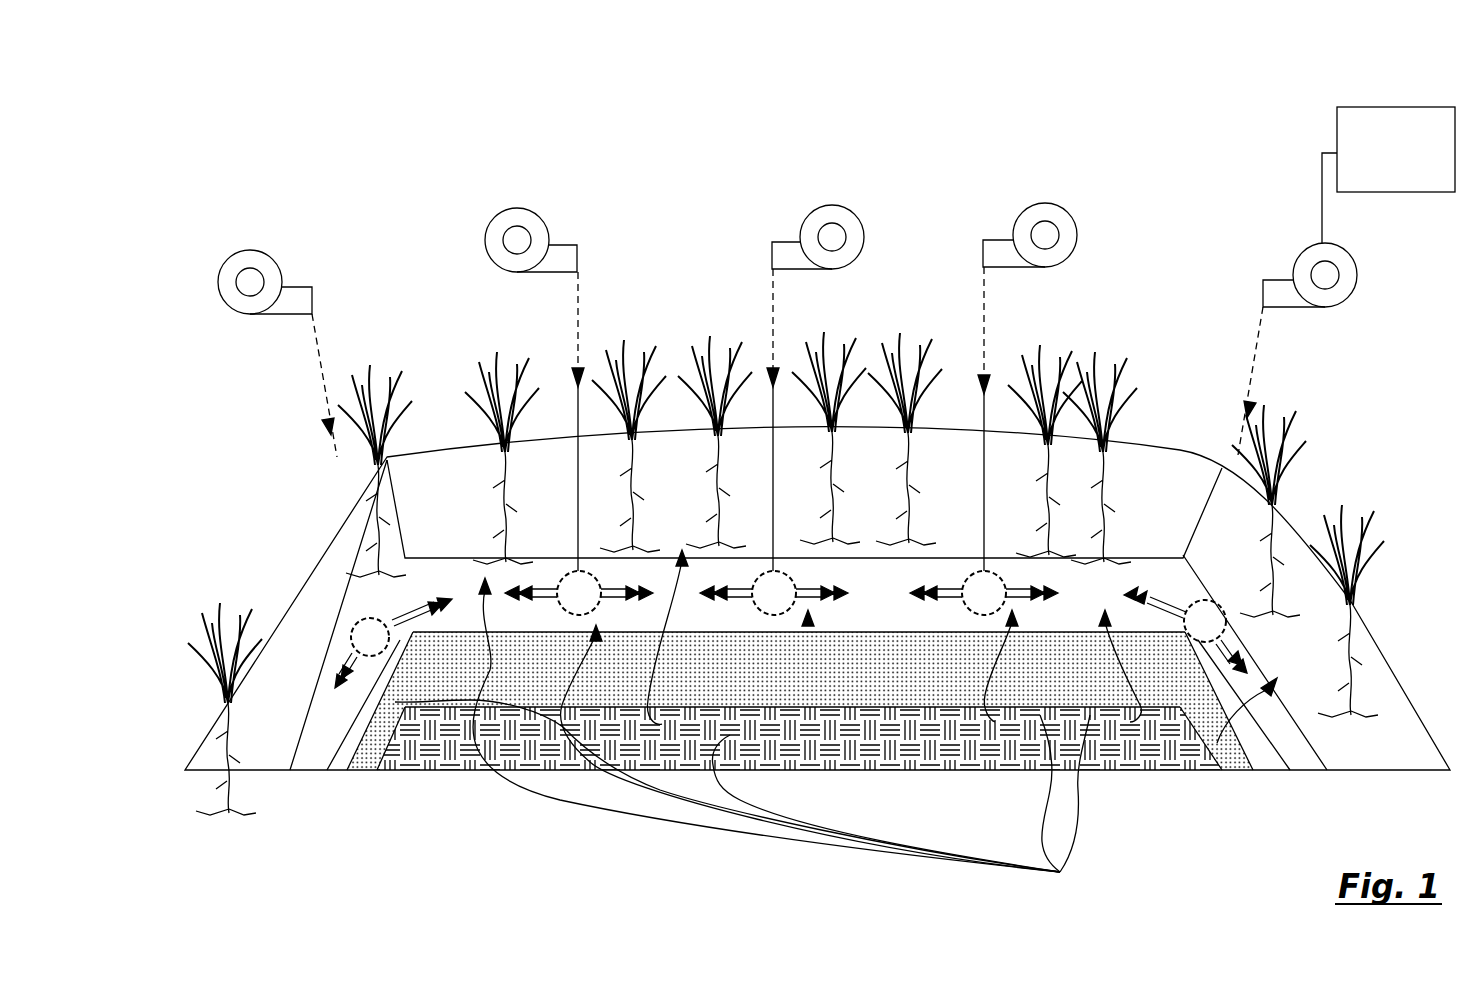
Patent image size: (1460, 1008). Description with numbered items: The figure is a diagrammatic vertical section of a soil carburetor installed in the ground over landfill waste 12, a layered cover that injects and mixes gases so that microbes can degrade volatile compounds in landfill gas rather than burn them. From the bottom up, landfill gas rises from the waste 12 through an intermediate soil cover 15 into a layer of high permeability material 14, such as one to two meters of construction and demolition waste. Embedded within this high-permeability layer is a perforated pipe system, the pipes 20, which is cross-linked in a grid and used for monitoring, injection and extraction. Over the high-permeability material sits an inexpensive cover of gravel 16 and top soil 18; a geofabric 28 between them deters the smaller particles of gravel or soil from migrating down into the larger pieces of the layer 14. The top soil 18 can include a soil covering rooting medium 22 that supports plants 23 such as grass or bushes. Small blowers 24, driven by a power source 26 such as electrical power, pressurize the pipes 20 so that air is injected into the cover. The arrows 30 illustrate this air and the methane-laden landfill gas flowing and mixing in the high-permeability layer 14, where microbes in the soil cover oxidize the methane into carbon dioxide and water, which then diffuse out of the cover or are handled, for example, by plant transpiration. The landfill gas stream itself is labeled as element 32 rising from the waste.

The landfill waste 12 is at (1123, 767).
The high permeability material 14 is at (345, 690).
The intermediate soil cover 15 is at (347, 760).
The gravel 16 is at (312, 617).
The top soil 18 is at (467, 445).
The pipes 20 is at (372, 658).
The soil covering rooting medium 22 is at (865, 440).
The plants 23 is at (1282, 400).
The blowers 24 is at (230, 275).
The power source 26 is at (1397, 107).
The geofabric 28 is at (363, 605).
The air 30 is at (316, 355).
The land fill gas 32 is at (1060, 872).